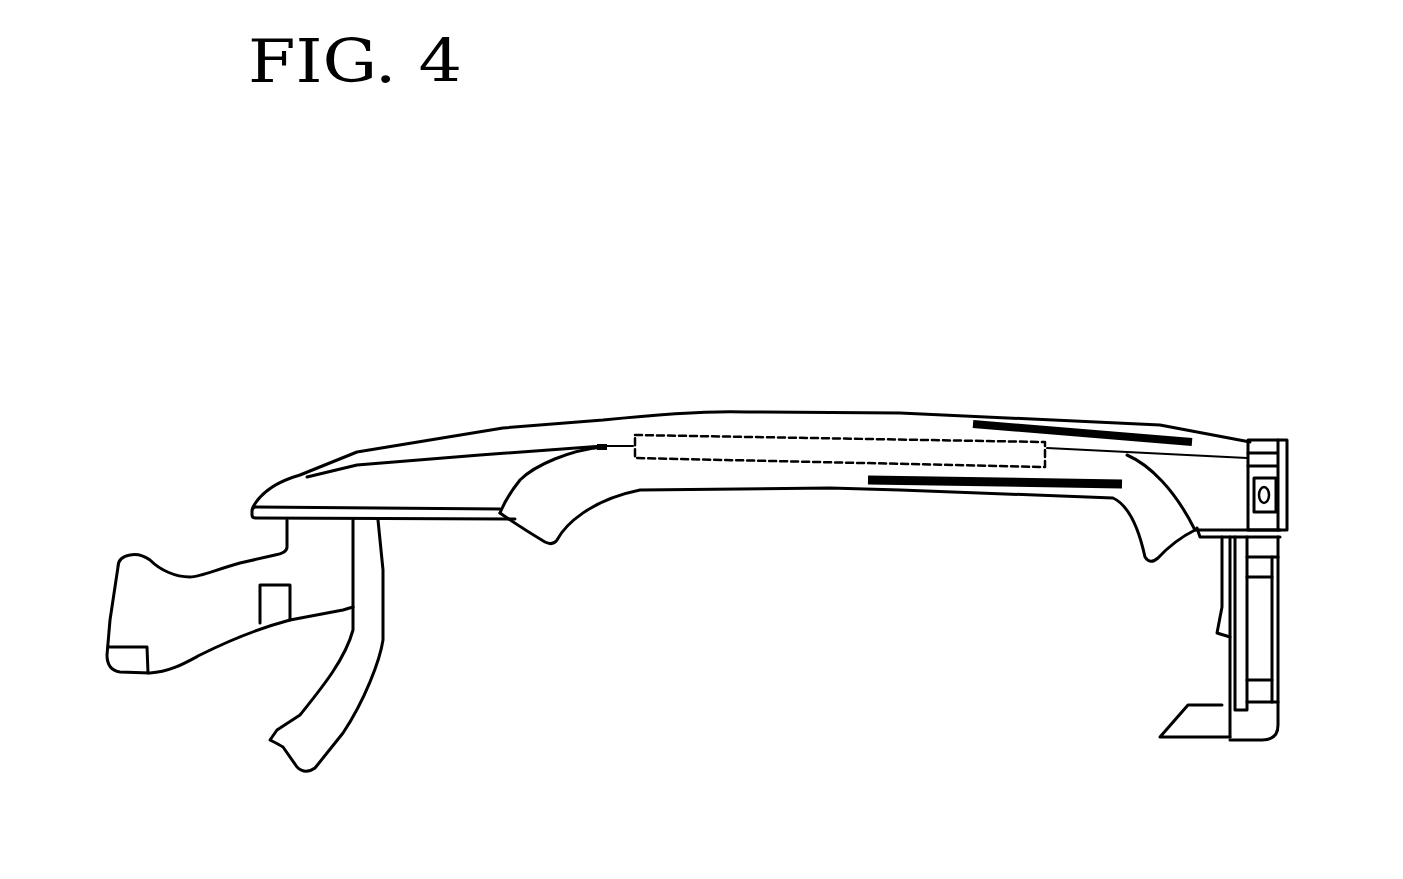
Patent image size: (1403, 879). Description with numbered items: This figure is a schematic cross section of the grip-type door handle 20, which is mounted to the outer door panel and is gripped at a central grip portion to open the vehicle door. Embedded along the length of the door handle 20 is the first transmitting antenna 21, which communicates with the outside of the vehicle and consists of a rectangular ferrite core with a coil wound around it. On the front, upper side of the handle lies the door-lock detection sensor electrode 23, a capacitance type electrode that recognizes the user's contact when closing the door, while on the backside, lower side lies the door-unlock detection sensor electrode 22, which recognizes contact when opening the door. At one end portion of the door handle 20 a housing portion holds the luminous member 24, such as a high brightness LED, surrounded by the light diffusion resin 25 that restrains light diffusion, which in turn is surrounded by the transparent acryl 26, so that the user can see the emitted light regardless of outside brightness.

The door handle 20 is at (753, 402).
The first transmitting antenna 21 is at (830, 447).
The door-unlock detection sensor electrode 22 is at (1047, 488).
The door-lock detection sensor electrode 23 is at (1097, 423).
The luminous member 24 is at (1270, 498).
The light diffusion resin 25 is at (1268, 480).
The transparent acryl 26 is at (1280, 447).